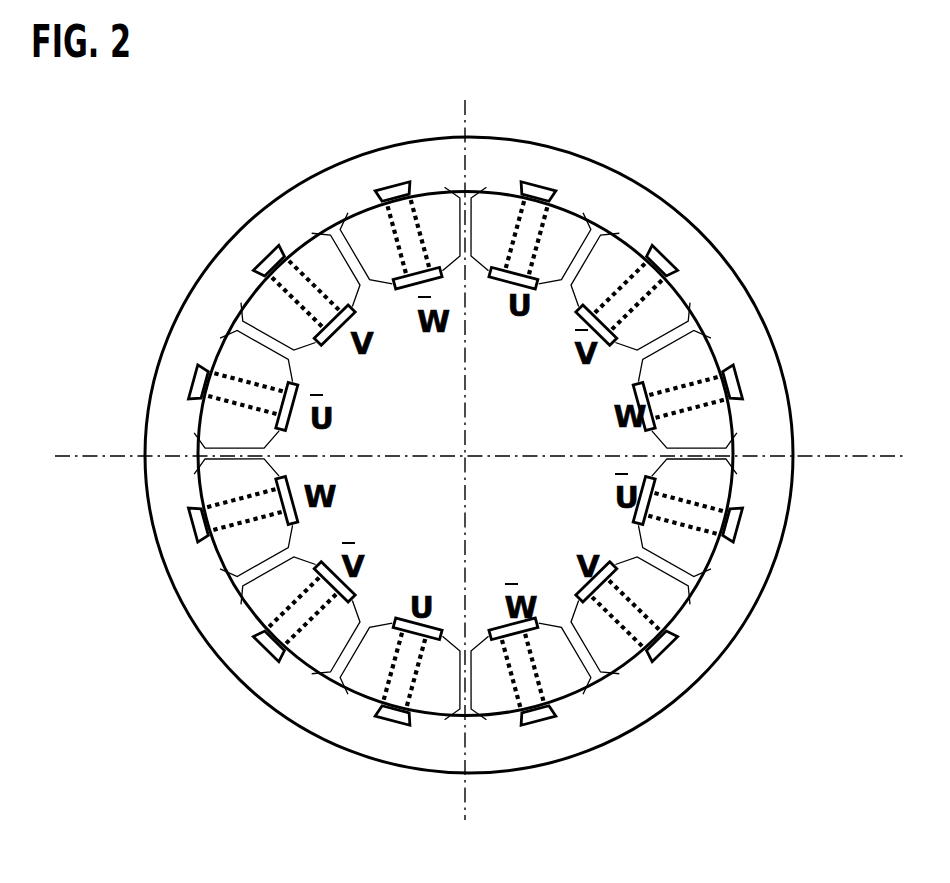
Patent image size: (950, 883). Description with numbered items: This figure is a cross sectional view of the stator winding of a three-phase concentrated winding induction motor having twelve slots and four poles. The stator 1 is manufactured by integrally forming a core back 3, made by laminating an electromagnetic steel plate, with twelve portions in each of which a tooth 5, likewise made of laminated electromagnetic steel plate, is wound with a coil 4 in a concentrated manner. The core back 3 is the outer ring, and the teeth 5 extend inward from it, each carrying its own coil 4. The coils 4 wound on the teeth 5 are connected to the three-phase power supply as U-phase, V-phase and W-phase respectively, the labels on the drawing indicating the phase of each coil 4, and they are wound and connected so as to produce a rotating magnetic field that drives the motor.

The stator 1 is at (500, 443).
The core back 3 is at (608, 212).
The coil 4 is at (698, 355).
The tooth 5 is at (703, 513).